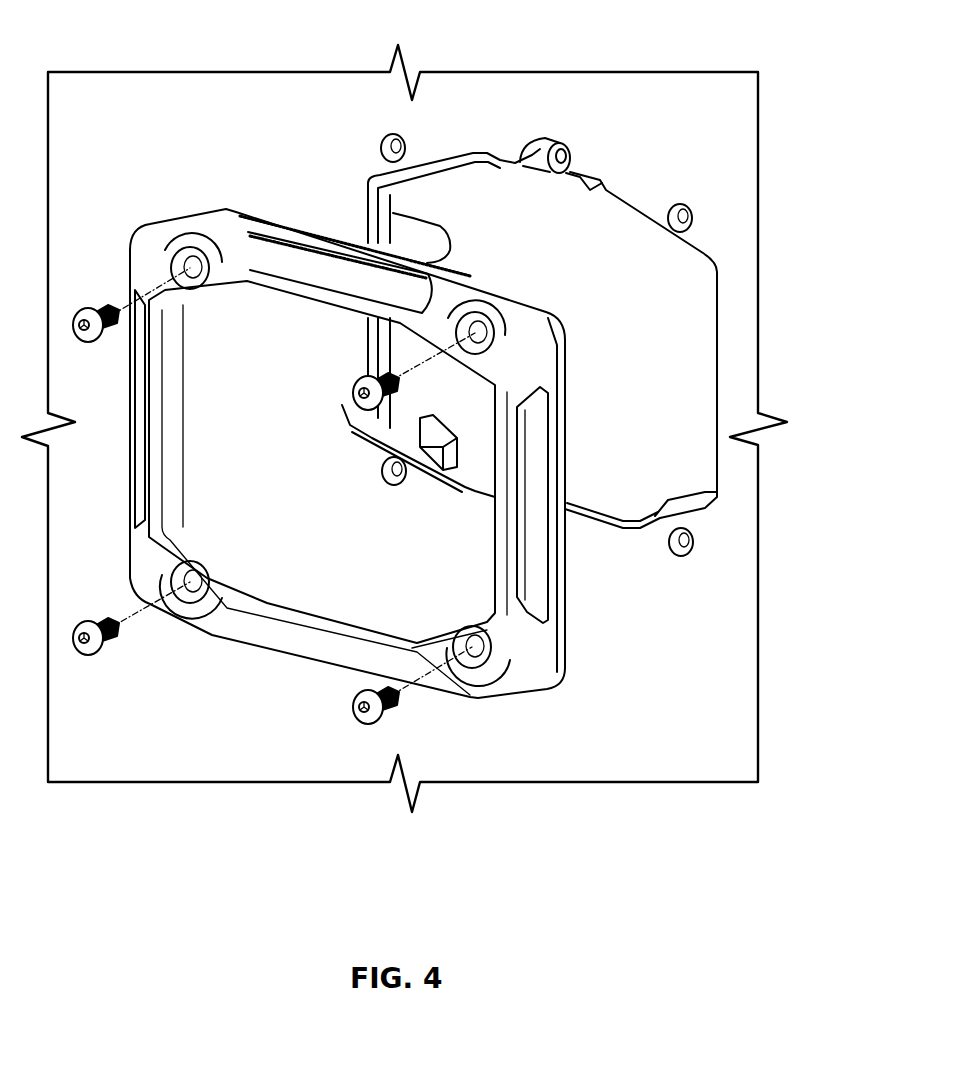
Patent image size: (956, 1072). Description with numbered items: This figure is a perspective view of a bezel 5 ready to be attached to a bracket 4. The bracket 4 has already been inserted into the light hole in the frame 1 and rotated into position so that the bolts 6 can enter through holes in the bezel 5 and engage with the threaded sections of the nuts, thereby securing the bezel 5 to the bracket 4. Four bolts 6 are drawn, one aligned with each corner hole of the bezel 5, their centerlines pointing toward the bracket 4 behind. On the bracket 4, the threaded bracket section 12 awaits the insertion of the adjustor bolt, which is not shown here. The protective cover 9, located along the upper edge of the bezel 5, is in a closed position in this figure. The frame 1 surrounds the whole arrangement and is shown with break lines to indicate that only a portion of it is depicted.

The frame 1 is at (722, 152).
The bracket 4 is at (705, 497).
The bezel 5 is at (172, 247).
The bolts 6 is at (354, 392).
The protective cover 9 is at (288, 255).
The threaded bracket section 12 is at (570, 150).